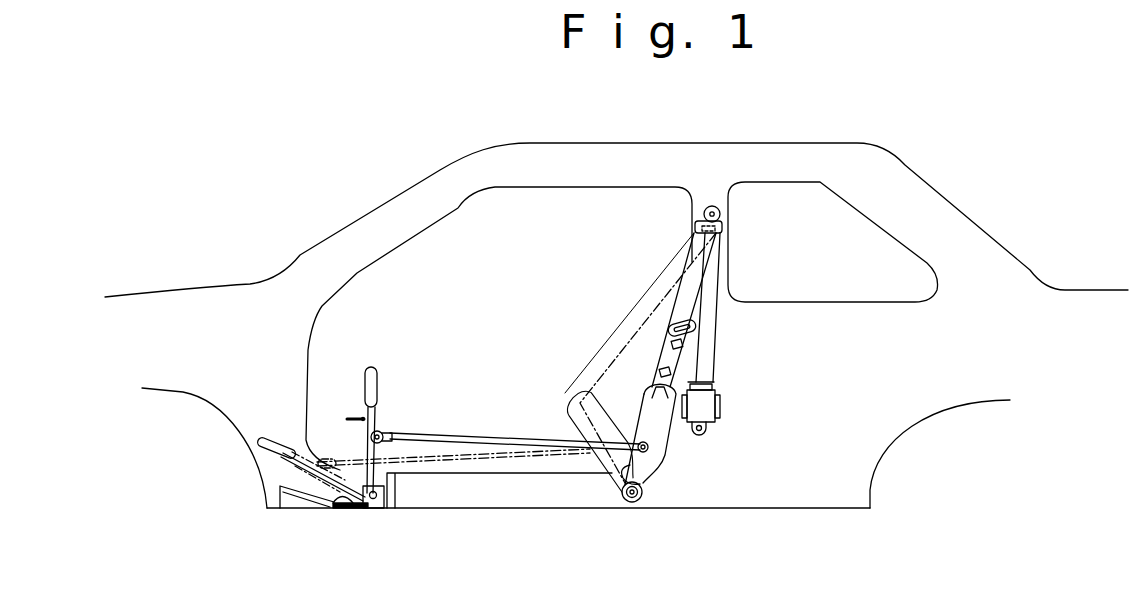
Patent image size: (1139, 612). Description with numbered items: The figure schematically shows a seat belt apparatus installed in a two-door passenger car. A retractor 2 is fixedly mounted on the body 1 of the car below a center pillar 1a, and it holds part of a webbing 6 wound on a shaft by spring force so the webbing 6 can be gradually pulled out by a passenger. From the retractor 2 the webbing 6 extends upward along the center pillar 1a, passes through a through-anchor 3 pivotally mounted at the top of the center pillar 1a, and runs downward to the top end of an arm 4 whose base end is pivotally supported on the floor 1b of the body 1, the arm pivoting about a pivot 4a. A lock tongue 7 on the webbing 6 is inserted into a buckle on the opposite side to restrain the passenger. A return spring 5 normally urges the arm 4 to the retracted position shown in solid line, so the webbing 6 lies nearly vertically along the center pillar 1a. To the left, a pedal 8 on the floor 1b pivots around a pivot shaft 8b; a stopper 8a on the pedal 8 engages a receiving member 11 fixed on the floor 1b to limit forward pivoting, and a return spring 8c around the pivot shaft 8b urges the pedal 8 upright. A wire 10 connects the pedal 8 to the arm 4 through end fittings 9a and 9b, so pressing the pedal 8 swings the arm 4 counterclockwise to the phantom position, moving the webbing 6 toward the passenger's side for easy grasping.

The body 1 is at (352, 210).
The center pillar 1a is at (723, 255).
The floor 1b is at (468, 508).
The retractor 2 is at (703, 405).
The through-anchor 3 is at (724, 222).
The arm 4 is at (653, 427).
The pivot shaft of arm 4a is at (631, 502).
The return spring 5 is at (632, 478).
The webbing 6 is at (688, 297).
The lock tongue 7 is at (685, 350).
The pedal 8 is at (376, 372).
The stopper 8a is at (350, 418).
The pivot shaft 8b is at (372, 500).
The return spring 8c is at (330, 503).
The end fitting 9a is at (385, 430).
The end fitting 9b is at (638, 443).
The wire 10 is at (499, 442).
The receiving member 11 is at (300, 498).